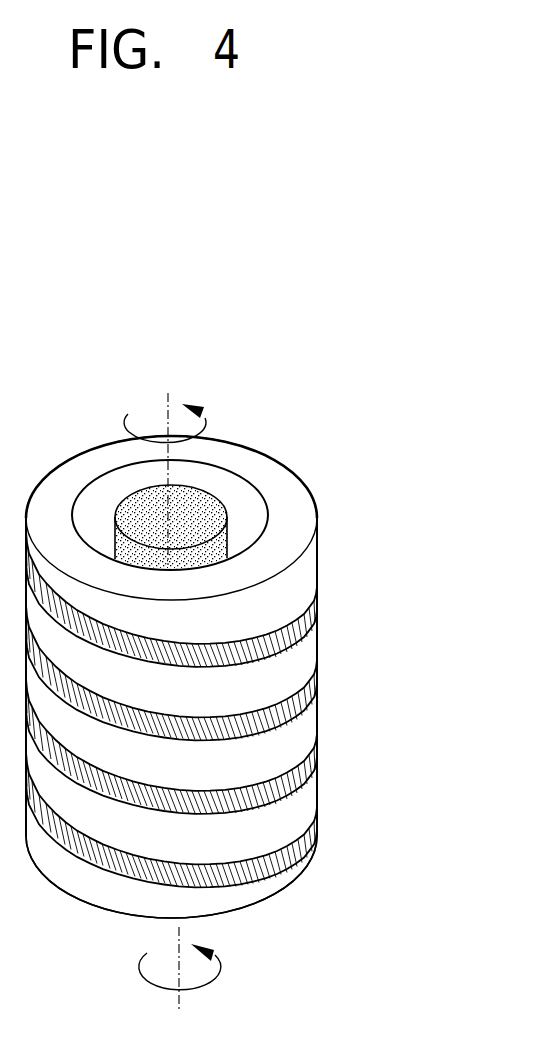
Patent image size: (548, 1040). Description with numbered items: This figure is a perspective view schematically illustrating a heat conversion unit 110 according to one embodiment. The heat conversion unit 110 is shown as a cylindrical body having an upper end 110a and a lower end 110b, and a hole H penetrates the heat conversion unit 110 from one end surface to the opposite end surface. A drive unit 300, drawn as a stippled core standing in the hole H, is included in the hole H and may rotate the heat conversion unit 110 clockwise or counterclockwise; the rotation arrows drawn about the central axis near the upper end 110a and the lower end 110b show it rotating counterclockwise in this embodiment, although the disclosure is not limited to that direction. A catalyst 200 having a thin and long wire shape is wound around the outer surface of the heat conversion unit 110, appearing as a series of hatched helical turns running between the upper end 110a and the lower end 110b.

The heat conversion unit 110 is at (93, 883).
The upper end of body 110a is at (300, 492).
The lower end of body 110b is at (287, 888).
The catalyst 200 is at (300, 630).
The drive unit 300 is at (205, 508).
The hole H is at (95, 500).